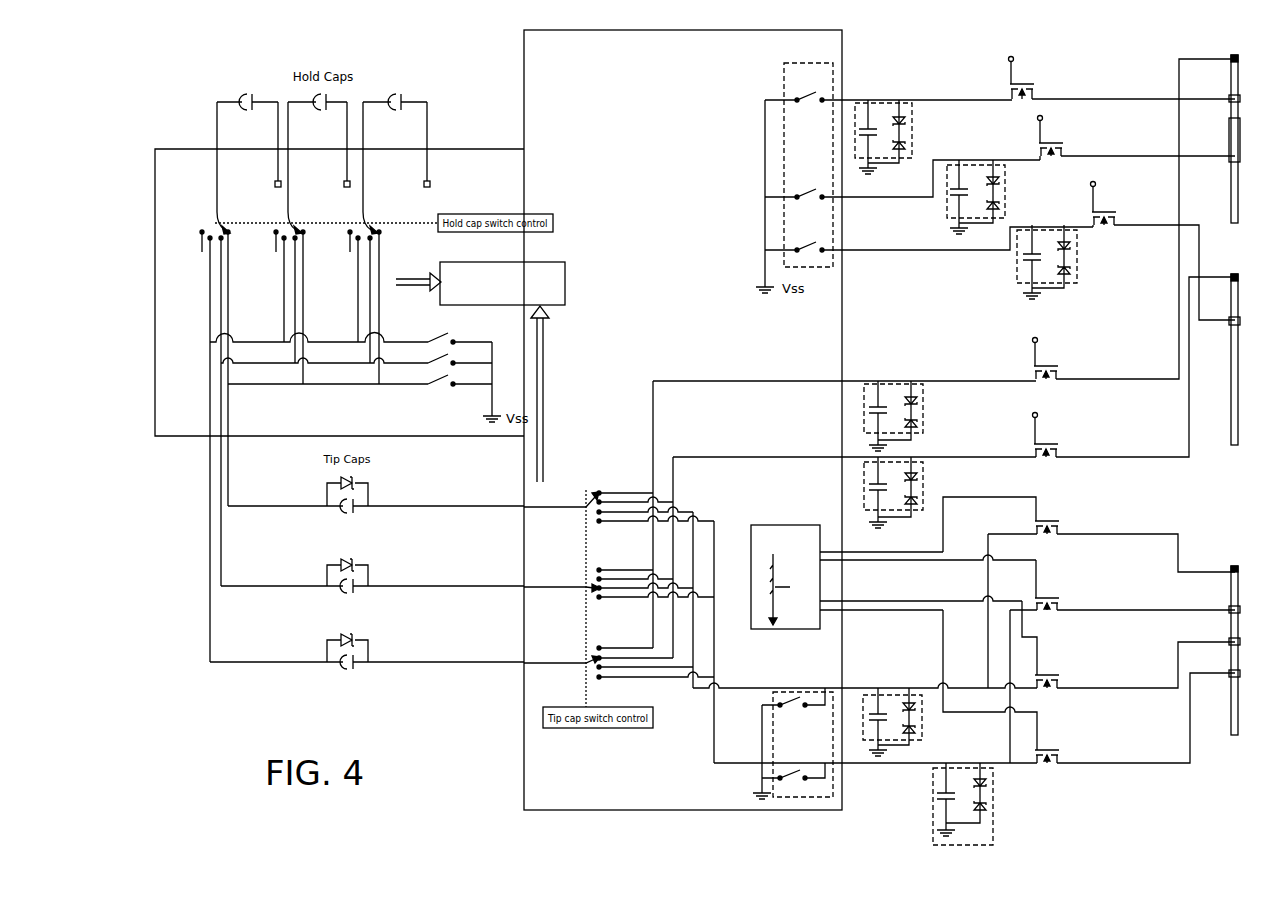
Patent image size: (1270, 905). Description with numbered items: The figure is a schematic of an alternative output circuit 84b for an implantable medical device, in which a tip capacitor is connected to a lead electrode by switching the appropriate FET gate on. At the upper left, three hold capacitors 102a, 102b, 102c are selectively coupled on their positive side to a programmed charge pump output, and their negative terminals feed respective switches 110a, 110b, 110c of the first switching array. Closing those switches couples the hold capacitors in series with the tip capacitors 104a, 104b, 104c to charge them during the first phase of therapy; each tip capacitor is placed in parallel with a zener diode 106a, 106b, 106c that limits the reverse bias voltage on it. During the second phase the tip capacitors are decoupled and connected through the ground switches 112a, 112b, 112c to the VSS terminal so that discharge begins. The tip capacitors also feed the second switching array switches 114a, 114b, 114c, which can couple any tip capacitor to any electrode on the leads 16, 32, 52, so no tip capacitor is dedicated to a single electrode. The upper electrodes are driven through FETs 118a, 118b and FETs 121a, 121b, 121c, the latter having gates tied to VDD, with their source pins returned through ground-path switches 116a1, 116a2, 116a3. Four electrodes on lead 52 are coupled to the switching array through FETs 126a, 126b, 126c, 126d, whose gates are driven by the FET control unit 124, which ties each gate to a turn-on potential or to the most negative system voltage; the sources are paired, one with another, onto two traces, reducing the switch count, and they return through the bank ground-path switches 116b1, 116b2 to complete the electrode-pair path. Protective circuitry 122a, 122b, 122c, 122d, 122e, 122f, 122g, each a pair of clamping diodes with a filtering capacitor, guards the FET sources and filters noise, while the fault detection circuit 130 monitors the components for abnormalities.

The output circuit 84b is at (663, 843).
The hold capacitor 102a is at (249, 162).
The hold capacitor 102b is at (319, 162).
The hold capacitor 102c is at (396, 162).
The tip capacitor 104a is at (376, 506).
The tip capacitor 104b is at (372, 587).
The tip capacitor 104c is at (367, 666).
The zener diode 106a is at (371, 481).
The zener diode 106b is at (371, 561).
The zener diode 106c is at (371, 636).
The switch 110a is at (232, 444).
The switch 110b is at (305, 305).
The switch 110c is at (380, 305).
The ground switch 112a is at (351, 334).
The ground switch 112b is at (356, 355).
The ground switch 112c is at (360, 376).
The switch 114a is at (619, 511).
The switch 114b is at (619, 589).
The switch 114c is at (619, 667).
The ground-path switch 116a1 is at (888, 88).
The ground-path switch 116a2 is at (902, 179).
The ground-path switch 116a3 is at (929, 239).
The ground-path switch 116b1 is at (793, 680).
The ground-path switch 116b2 is at (781, 746).
The field effect transistor 118a is at (944, 220).
The field effect transistor 118b is at (954, 377).
The field effect transistor 121a is at (1115, 77).
The field effect transistor 121b is at (1130, 137).
The field effect transistor 121c is at (1146, 248).
The protective circuitry 122a is at (900, 142).
The protective circuitry 122b is at (982, 201).
The protective circuitry 122c is at (1055, 265).
The protective circuitry 122d is at (901, 417).
The protective circuitry 122e is at (901, 496).
The protective circuitry 122f is at (902, 724).
The protective circuitry 122g is at (980, 804).
The FET control unit 124 is at (751, 598).
The field effect transistor 126a is at (1111, 601).
The field effect transistor 126b is at (1122, 677).
The field effect transistor 126c is at (1135, 665).
The field effect transistor 126d is at (1134, 728).
The fault detection circuit 130 is at (502, 262).
The lead 32 is at (1247, 139).
The lead 16 is at (1247, 359).
The lead 52 is at (1247, 650).